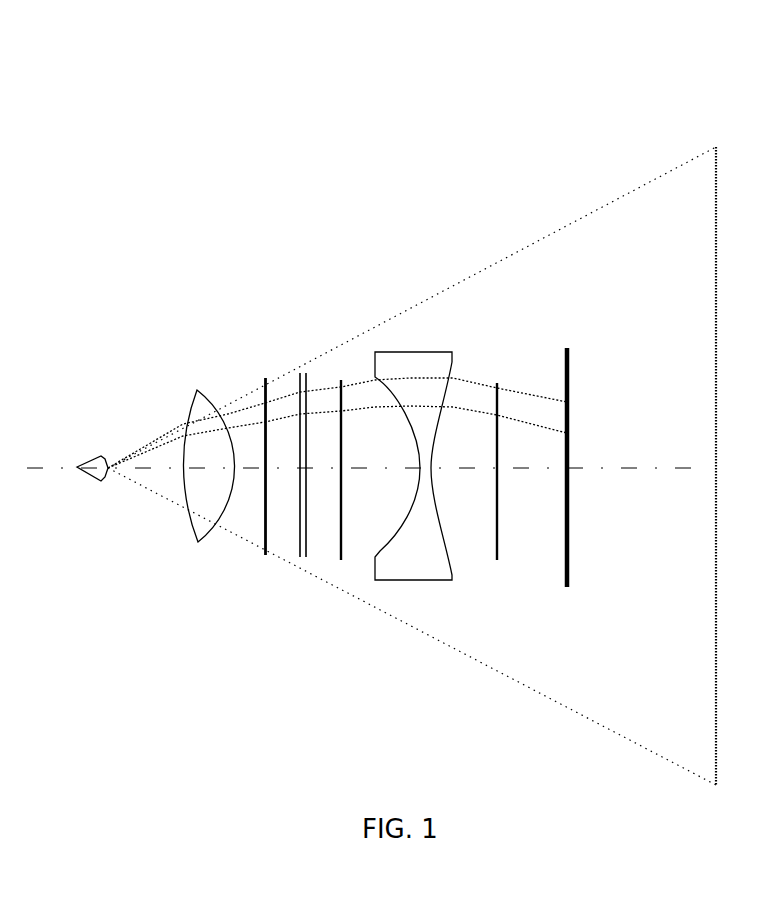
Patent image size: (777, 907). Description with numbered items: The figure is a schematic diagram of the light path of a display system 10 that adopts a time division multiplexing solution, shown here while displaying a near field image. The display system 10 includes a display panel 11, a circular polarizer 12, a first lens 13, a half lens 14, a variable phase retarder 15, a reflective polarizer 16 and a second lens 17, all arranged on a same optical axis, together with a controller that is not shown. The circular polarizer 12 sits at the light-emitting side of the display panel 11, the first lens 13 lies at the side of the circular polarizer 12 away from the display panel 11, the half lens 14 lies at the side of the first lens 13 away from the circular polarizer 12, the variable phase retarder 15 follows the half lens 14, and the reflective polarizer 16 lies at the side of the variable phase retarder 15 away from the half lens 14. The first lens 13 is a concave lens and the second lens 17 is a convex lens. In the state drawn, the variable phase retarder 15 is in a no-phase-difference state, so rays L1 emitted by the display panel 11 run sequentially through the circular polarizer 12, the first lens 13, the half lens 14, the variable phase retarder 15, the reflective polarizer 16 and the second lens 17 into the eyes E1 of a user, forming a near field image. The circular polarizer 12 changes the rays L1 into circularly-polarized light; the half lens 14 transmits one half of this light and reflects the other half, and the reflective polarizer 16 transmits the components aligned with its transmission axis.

The display system 10 is at (408, 98).
The eyes E1 is at (92, 457).
The rays L1 is at (145, 442).
The second lens 17 is at (196, 392).
The reflective polarizer 16 is at (264, 378).
The variable phase retarder 15 is at (300, 374).
The half lens 14 is at (340, 380).
The first lens 13 is at (420, 364).
The circular polarizer 12 is at (496, 383).
The display panel 11 is at (566, 350).